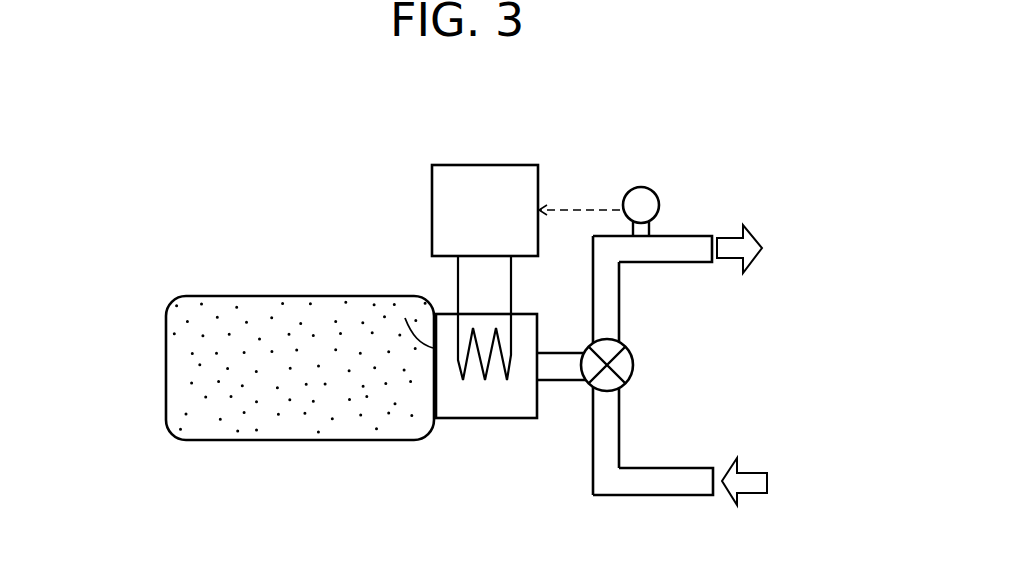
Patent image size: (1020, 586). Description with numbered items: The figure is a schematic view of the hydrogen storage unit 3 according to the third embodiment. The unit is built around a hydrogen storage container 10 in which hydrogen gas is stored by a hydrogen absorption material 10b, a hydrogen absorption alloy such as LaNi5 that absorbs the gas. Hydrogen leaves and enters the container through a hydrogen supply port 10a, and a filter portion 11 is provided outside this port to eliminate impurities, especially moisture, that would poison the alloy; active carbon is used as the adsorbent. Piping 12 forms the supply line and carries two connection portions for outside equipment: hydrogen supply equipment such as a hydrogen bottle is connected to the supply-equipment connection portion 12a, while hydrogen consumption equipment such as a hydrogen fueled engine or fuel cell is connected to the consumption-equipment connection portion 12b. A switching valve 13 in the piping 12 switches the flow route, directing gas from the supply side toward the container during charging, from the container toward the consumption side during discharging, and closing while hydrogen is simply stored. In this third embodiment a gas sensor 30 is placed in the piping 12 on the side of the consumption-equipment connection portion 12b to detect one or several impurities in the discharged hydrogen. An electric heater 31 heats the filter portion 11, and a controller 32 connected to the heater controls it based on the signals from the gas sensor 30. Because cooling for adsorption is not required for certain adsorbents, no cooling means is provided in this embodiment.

The hydrogen storage unit 3 is at (155, 343).
The hydrogen storage container 10 is at (212, 296).
The hydrogen supply port 10a is at (405, 318).
The hydrogen absorption material 10b is at (288, 320).
The filter portion 11 is at (457, 420).
The piping 12 is at (622, 497).
The supply-equipment connection portion 12a is at (695, 497).
The consumption-equipment connection portion 12b is at (693, 236).
The switching valve 13 is at (633, 365).
The gas sensor 30 is at (641, 187).
The electric heater 31 is at (511, 356).
The controller 32 is at (494, 165).